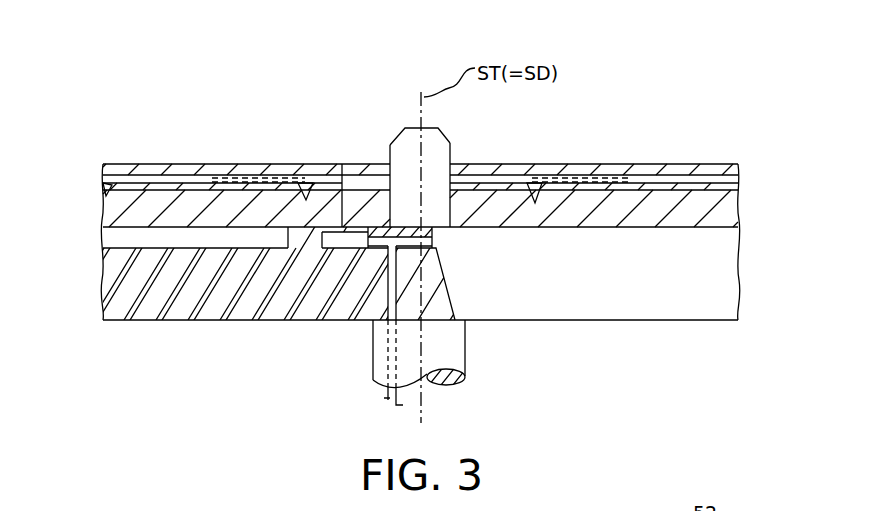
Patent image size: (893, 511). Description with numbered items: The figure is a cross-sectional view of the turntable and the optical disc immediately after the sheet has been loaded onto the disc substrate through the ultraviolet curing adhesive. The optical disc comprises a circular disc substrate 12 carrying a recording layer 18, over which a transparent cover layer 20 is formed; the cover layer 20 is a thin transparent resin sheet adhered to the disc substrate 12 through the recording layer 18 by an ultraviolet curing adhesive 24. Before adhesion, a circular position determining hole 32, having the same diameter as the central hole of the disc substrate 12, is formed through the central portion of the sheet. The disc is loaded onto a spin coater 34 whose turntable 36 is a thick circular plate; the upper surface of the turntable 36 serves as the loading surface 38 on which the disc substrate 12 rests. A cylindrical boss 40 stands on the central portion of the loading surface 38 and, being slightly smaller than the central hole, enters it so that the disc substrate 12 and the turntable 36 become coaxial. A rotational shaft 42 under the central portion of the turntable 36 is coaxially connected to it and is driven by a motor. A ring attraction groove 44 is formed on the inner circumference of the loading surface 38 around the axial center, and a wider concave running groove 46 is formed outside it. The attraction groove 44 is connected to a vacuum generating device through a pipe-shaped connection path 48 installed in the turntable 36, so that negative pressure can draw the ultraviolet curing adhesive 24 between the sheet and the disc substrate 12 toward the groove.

The disc substrate 12 is at (103, 208).
The recording layer 18 is at (743, 184).
The cover layer 20 is at (103, 172).
The ultraviolet curing adhesive 24 is at (323, 165).
The position determining hole 32 is at (392, 158).
The spin coater 34 is at (696, 107).
The turntable 36 is at (740, 260).
The loading surface 38 is at (655, 163).
The boss 40 is at (449, 138).
The rotational shaft 42 is at (373, 365).
The attraction groove 44 is at (344, 178).
The running groove 46 is at (103, 236).
The connection path 48 is at (375, 318).